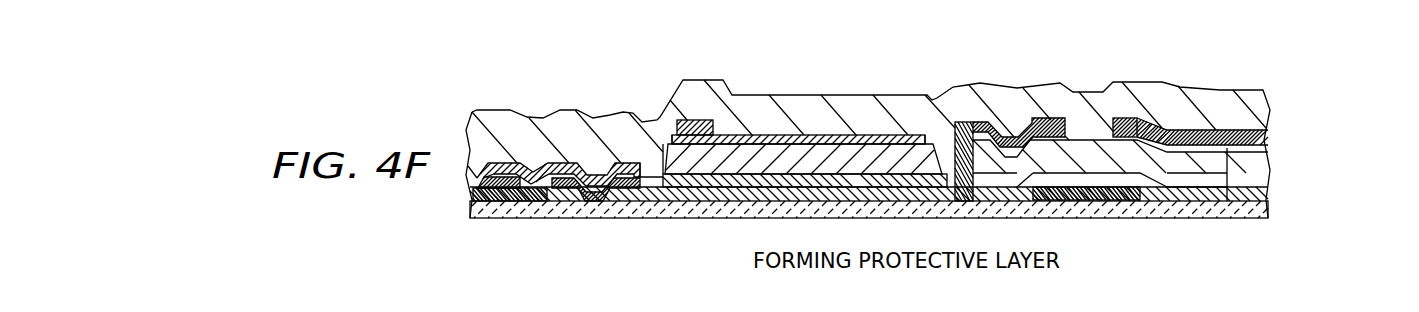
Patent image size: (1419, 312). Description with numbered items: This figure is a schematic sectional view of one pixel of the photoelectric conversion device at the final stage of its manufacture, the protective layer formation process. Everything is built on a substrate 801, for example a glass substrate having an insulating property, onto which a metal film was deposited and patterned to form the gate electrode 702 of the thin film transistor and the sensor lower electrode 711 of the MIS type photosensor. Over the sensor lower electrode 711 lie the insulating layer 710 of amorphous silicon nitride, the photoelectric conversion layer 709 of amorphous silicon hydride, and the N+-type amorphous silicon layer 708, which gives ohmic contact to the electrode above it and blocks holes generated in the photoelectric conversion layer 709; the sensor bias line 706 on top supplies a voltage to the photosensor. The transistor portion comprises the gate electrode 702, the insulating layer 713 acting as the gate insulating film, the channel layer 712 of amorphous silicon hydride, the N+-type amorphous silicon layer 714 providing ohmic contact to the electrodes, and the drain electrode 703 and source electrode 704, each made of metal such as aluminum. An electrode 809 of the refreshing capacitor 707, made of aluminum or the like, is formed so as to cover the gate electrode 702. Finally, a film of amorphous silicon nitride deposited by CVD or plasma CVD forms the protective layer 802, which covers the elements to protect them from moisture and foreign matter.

The gate electrode 702 is at (542, 196).
The drain electrode 703 is at (1013, 120).
The source electrode 704 is at (1220, 140).
The sensor bias line 706 is at (705, 120).
The refreshing capacitor 707 is at (512, 177).
The N+-type amorphous silicon layer 708 is at (763, 135).
The photoelectric conversion layer 709 is at (822, 152).
The insulating layer 710 is at (881, 177).
The sensor lower electrode 711 is at (698, 200).
The channel layer 712 is at (1087, 158).
The insulating layer 713 is at (1207, 193).
The N+-type amorphous silicon layer 714 is at (1137, 118).
The substrate 801 is at (623, 219).
The protective layer 802 is at (930, 98).
The electrode 809 is at (500, 160).